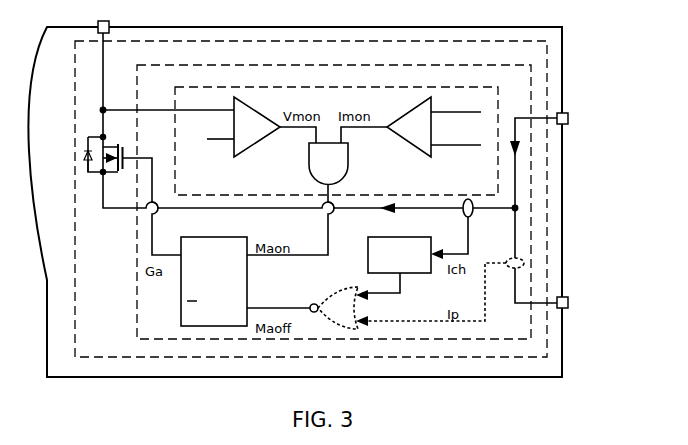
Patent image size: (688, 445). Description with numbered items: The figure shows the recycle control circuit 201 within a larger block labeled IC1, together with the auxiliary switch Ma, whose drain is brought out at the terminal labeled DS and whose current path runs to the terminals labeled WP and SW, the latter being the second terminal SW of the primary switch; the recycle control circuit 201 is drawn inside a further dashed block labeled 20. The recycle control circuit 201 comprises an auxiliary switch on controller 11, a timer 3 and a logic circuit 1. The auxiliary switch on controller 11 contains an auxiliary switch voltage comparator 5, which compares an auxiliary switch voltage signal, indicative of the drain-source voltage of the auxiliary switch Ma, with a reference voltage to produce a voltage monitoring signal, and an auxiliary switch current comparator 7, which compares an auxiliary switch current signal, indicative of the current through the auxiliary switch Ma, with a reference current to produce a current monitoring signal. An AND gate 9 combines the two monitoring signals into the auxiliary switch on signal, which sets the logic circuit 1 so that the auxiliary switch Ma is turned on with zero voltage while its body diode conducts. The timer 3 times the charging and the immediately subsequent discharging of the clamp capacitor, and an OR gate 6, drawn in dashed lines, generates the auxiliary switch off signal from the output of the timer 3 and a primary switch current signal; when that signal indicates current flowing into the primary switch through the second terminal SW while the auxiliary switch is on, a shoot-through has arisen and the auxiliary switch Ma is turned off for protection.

The integrated circuit IC1 is at (510, 27).
The control circuit 20 is at (118, 340).
The recycle control circuit 201 is at (475, 65).
The auxiliary switch on controller 11 is at (484, 87).
The auxiliary switch voltage comparator 5 is at (252, 97).
The auxiliary switch current comparator 7 is at (413, 97).
The AND gate 9 is at (348, 152).
The logic circuit 1 is at (240, 237).
The timer 3 is at (425, 237).
The OR gate 6 is at (340, 284).
The auxiliary switch Ma is at (106, 163).
The DS terminal DS is at (100, 18).
The WP terminal WP is at (577, 118).
The second terminal SW is at (577, 302).